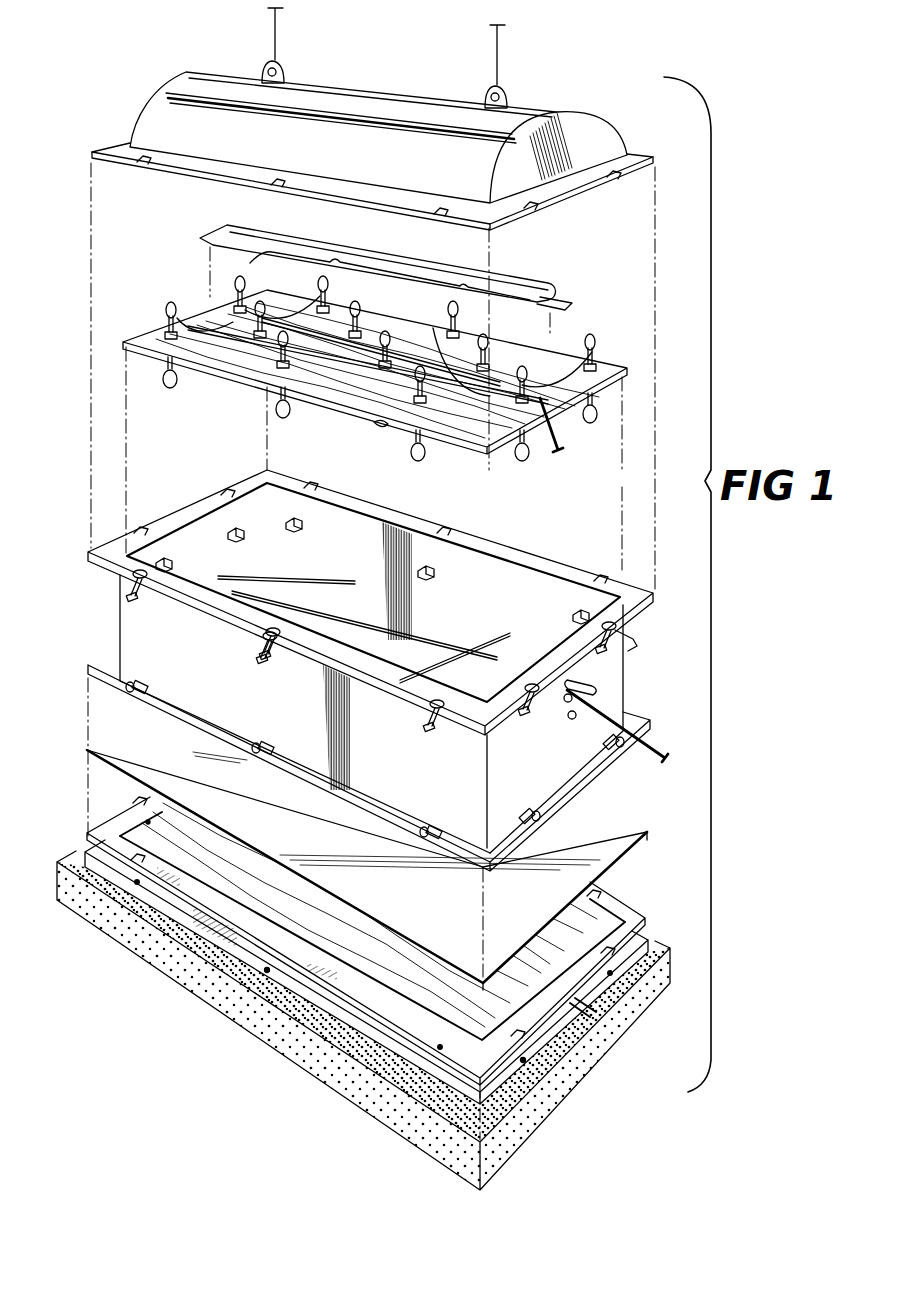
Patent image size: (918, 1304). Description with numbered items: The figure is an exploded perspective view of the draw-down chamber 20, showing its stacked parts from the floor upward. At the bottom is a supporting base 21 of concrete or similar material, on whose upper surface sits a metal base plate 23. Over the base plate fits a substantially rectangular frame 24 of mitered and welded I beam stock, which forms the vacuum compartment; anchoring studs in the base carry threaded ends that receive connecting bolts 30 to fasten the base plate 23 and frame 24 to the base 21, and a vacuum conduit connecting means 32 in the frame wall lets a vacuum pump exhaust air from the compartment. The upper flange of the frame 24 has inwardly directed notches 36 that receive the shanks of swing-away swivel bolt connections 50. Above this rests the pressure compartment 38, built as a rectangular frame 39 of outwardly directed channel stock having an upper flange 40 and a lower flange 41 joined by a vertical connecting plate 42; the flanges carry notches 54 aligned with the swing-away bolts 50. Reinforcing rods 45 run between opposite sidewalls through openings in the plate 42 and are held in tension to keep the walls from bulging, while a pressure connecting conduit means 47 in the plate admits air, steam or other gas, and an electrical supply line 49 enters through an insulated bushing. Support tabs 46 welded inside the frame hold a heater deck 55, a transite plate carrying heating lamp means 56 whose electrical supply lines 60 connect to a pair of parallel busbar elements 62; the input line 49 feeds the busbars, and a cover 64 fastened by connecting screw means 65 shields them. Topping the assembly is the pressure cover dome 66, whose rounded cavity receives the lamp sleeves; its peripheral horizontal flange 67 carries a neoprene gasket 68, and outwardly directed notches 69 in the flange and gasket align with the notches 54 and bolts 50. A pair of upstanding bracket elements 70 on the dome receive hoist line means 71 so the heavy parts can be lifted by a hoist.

The draw-down chamber 20 is at (105, 944).
The supporting base 21 is at (355, 1100).
The base plate 23 is at (650, 960).
The rectangular frame 24 is at (640, 905).
The connecting bolt 30 is at (265, 972).
The vacuum conduit connecting means 32 is at (643, 1052).
The inwardly directed notches 36 is at (138, 802).
The pressure compartment 38 is at (513, 577).
The rectangular frame 39 is at (112, 607).
The upper flange 40 is at (655, 597).
The lower flange 41 is at (557, 790).
The vertical connecting plate 42 is at (631, 638).
The reinforcing rods 45 is at (347, 585).
The support tabs 46 is at (294, 526).
The pressure connecting conduit means 47 is at (597, 682).
The electrical supply line 49 is at (558, 435).
The swing-away swivel bolt connection 50 is at (273, 664).
The notch 54 is at (267, 636).
The heater deck 55 is at (625, 365).
The heating lamp means 56 is at (400, 440).
The electrical supply line 60 is at (445, 333).
The busbar elements 62 is at (507, 382).
The cover 64 is at (523, 279).
The connecting screw means 65 is at (260, 262).
The pressure cover dome 66 is at (577, 126).
The horizontal flange 67 is at (634, 151).
The neoprene gasket 68 is at (637, 172).
The outwardly directed notches 69 is at (146, 164).
The upstanding bracket elements 70 is at (284, 71).
The hoist line means 71 is at (279, 38).